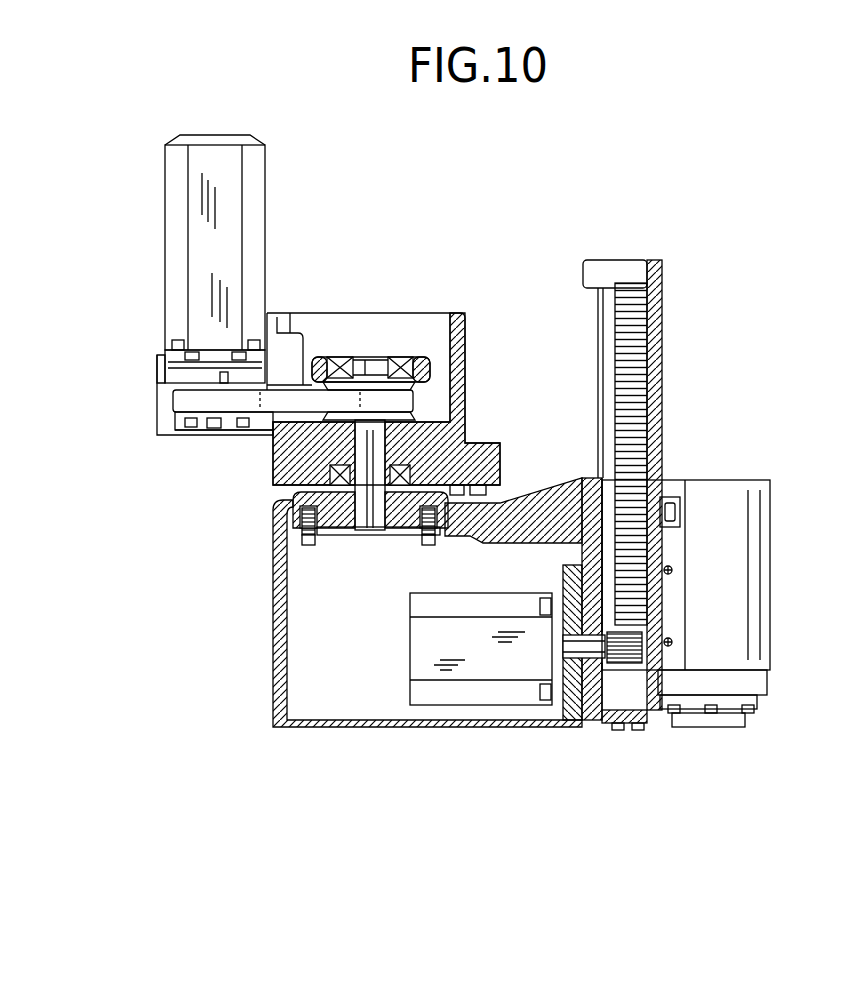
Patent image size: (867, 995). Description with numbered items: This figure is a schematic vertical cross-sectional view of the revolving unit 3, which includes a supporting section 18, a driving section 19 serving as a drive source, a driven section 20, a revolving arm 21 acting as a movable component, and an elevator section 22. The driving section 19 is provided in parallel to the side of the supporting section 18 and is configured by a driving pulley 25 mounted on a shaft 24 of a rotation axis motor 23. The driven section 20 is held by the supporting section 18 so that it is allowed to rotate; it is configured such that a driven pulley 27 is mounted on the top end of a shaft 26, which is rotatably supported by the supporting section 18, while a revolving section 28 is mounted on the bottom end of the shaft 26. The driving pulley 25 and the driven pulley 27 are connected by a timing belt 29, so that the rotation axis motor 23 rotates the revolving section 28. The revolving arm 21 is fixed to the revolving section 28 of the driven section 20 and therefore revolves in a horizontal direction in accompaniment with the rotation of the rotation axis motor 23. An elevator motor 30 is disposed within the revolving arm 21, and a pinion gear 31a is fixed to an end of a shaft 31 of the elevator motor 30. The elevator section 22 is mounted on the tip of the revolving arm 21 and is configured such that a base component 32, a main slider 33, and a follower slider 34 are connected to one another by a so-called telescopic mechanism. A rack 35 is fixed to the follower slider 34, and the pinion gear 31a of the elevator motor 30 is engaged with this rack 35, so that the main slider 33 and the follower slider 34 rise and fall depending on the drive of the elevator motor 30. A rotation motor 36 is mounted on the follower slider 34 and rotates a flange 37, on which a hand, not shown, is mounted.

The revolving unit 3 is at (517, 248).
The supporting section 18 is at (465, 340).
The driving section 19 is at (158, 328).
The driven section 20 is at (368, 335).
The revolving arm 21 is at (273, 633).
The elevator section 22 is at (682, 463).
The rotation axis motor 23 is at (268, 200).
The shaft 24 is at (212, 432).
The driving pulley 25 is at (178, 435).
The shaft 26 is at (378, 357).
The driven pulley 27 is at (430, 417).
The revolving section 28 is at (275, 513).
The timing belt 29 is at (172, 400).
The elevator motor 30 is at (475, 706).
The shaft 31 is at (583, 728).
The pinion gear 31a is at (633, 725).
The base component 32 is at (588, 478).
The main slider 33 is at (613, 258).
The follower slider 34 is at (662, 288).
The rack 35 is at (637, 283).
The rotation motor 36 is at (770, 578).
The flange 37 is at (712, 730).